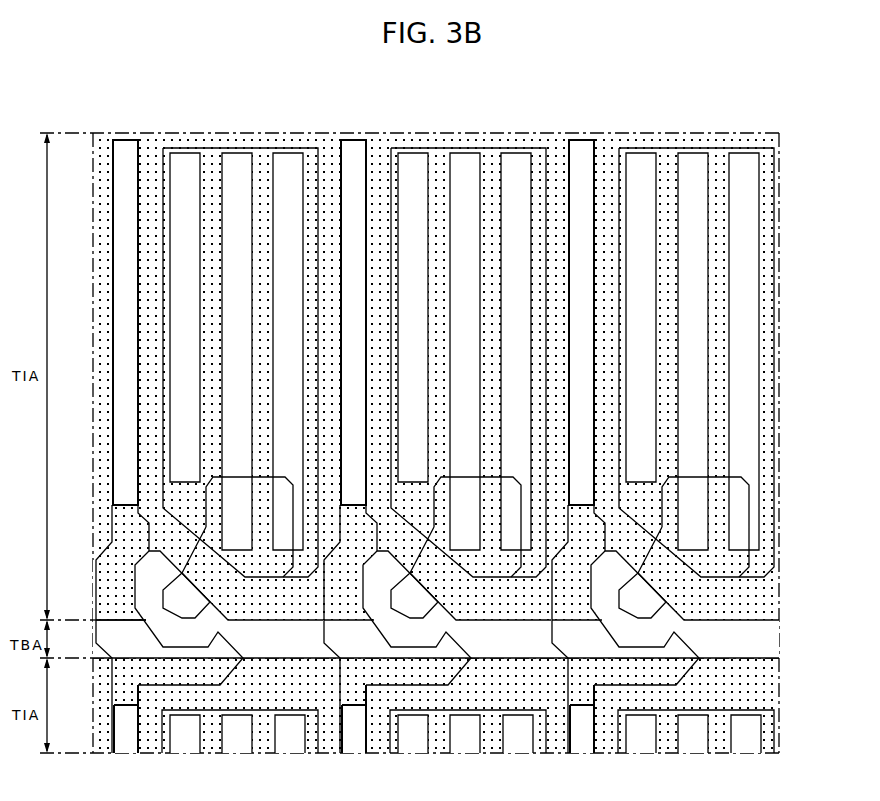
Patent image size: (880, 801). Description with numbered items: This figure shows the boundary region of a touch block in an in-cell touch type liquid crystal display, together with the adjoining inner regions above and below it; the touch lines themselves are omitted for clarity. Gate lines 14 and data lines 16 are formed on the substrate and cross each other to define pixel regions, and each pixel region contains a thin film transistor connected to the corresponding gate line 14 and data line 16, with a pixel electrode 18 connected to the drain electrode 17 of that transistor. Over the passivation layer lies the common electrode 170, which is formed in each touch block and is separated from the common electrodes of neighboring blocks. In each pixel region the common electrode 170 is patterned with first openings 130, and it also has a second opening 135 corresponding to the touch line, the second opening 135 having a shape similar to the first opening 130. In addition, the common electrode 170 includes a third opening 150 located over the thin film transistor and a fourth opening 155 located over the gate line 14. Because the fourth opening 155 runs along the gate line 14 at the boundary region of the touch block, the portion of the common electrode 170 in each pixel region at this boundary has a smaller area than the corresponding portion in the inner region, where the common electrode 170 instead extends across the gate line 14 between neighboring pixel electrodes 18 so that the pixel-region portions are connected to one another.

The gate line 14 is at (762, 640).
The data line 16 is at (353, 140).
The drain electrode 17 is at (177, 597).
The pixel electrode 18 is at (247, 150).
The first opening 130 is at (742, 168).
The second opening 135 is at (581, 163).
The third opening 150 is at (146, 593).
The fourth opening 155 is at (760, 632).
The common electrode 170 is at (609, 150).